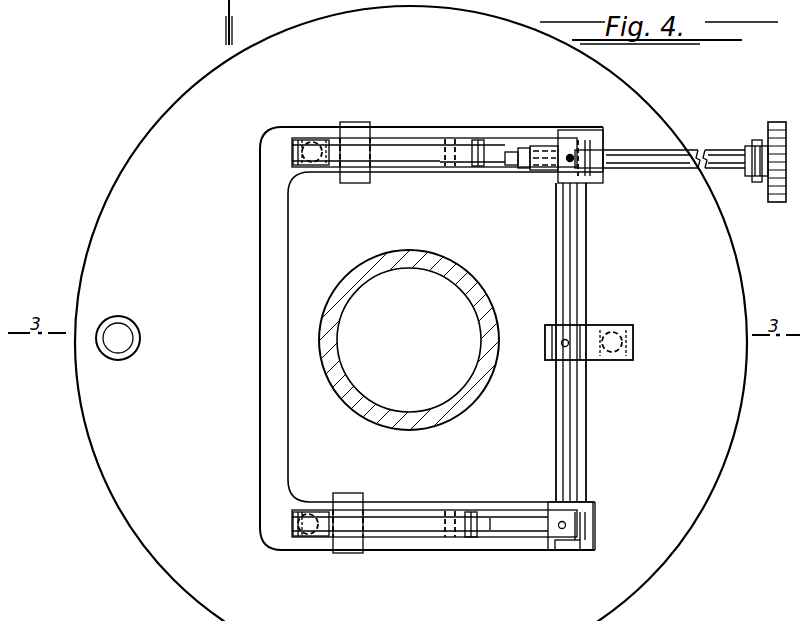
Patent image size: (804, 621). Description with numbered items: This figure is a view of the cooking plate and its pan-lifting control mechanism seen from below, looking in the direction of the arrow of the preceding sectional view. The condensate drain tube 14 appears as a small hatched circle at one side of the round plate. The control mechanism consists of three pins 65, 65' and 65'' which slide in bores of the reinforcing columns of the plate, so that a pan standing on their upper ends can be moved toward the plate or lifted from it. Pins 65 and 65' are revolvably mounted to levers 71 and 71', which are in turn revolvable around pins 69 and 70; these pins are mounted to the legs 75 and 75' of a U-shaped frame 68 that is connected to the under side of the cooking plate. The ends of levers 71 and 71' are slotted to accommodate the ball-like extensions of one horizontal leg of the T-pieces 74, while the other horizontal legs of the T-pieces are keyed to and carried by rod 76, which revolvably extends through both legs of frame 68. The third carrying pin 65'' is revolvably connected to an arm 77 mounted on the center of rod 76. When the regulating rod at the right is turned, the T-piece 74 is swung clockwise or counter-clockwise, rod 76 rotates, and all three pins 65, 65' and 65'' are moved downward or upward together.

The tube 14 is at (125, 332).
The pin 65 is at (311, 128).
The pin 65' is at (306, 547).
The carrying pin 65'' is at (630, 326).
The U-shaped frame 68 is at (272, 386).
The pin 69 is at (358, 133).
The pin 70 is at (348, 527).
The lever 71 is at (367, 126).
The lever 71' is at (366, 549).
The T-piece 74 is at (540, 158).
The leg 75 is at (472, 128).
The leg 75' is at (516, 542).
The rod 76 is at (573, 232).
The arm 77 is at (587, 349).